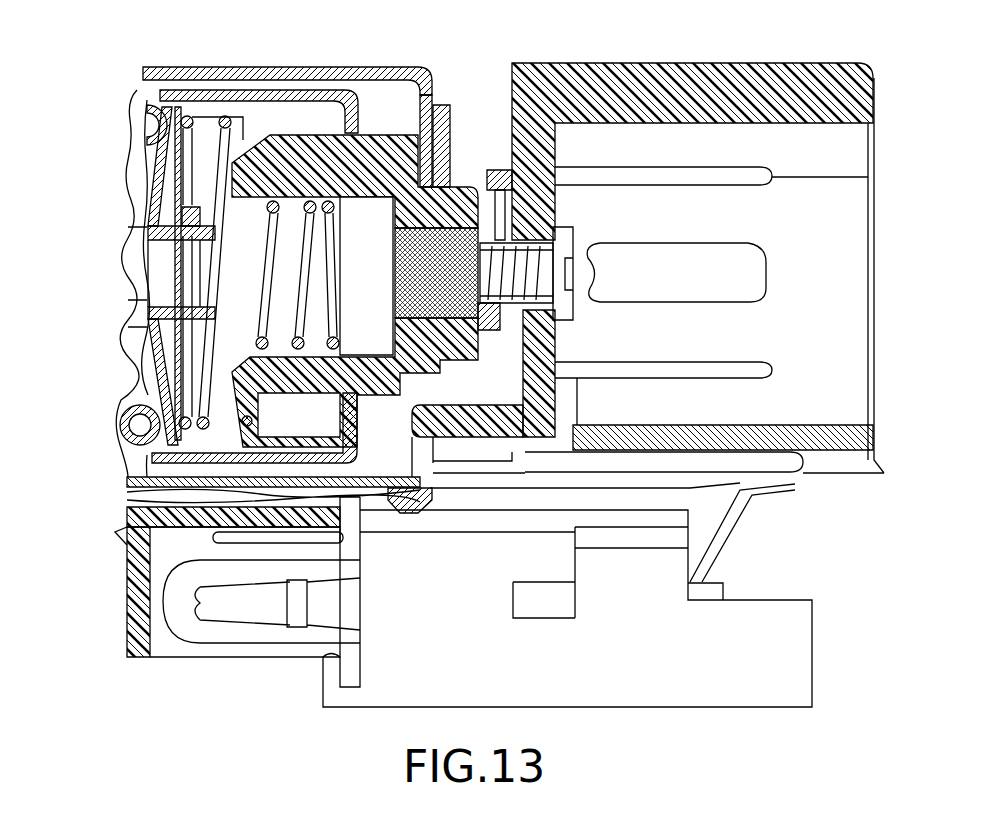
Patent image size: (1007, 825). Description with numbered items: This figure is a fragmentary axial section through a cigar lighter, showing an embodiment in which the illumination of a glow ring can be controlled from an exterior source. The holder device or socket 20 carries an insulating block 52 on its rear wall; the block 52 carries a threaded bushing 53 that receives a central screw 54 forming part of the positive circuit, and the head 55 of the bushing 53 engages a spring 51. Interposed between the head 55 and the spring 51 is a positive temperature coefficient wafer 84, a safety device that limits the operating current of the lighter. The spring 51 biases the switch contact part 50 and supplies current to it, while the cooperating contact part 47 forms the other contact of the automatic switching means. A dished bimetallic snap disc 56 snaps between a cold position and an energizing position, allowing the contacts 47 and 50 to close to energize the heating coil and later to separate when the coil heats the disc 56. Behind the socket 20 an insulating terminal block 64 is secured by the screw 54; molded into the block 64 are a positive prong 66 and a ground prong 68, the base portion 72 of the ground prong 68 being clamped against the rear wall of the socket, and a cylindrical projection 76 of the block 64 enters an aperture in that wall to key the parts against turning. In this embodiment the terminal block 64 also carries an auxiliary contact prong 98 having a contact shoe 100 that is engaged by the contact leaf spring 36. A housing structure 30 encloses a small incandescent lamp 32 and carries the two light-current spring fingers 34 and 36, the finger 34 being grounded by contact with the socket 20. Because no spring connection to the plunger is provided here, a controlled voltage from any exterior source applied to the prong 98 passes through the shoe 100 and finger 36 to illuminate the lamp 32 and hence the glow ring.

The socket 20 is at (254, 57).
The housing structure 30 is at (562, 683).
The lamp 32 is at (198, 628).
The spring finger 34 is at (402, 495).
The spring finger 36 is at (720, 540).
The contact part 47 is at (205, 252).
The contact part 50 is at (200, 288).
The spring 51 is at (216, 200).
The insulating block 52 is at (340, 98).
The threaded bushing 53 is at (444, 258).
The central screw 54 is at (567, 315).
The head of the bushing 55 is at (428, 160).
The bimetallic snap disc 56 is at (177, 350).
The terminal block 64 is at (612, 83).
The positive prong 66 is at (687, 177).
The ground prong 68 is at (708, 258).
The base portion 72 is at (450, 128).
The cylindrical projection 76 is at (521, 445).
The PTC wafer 84 is at (372, 210).
The auxiliary contact prong 98 is at (725, 368).
The contact shoe 100 is at (718, 462).